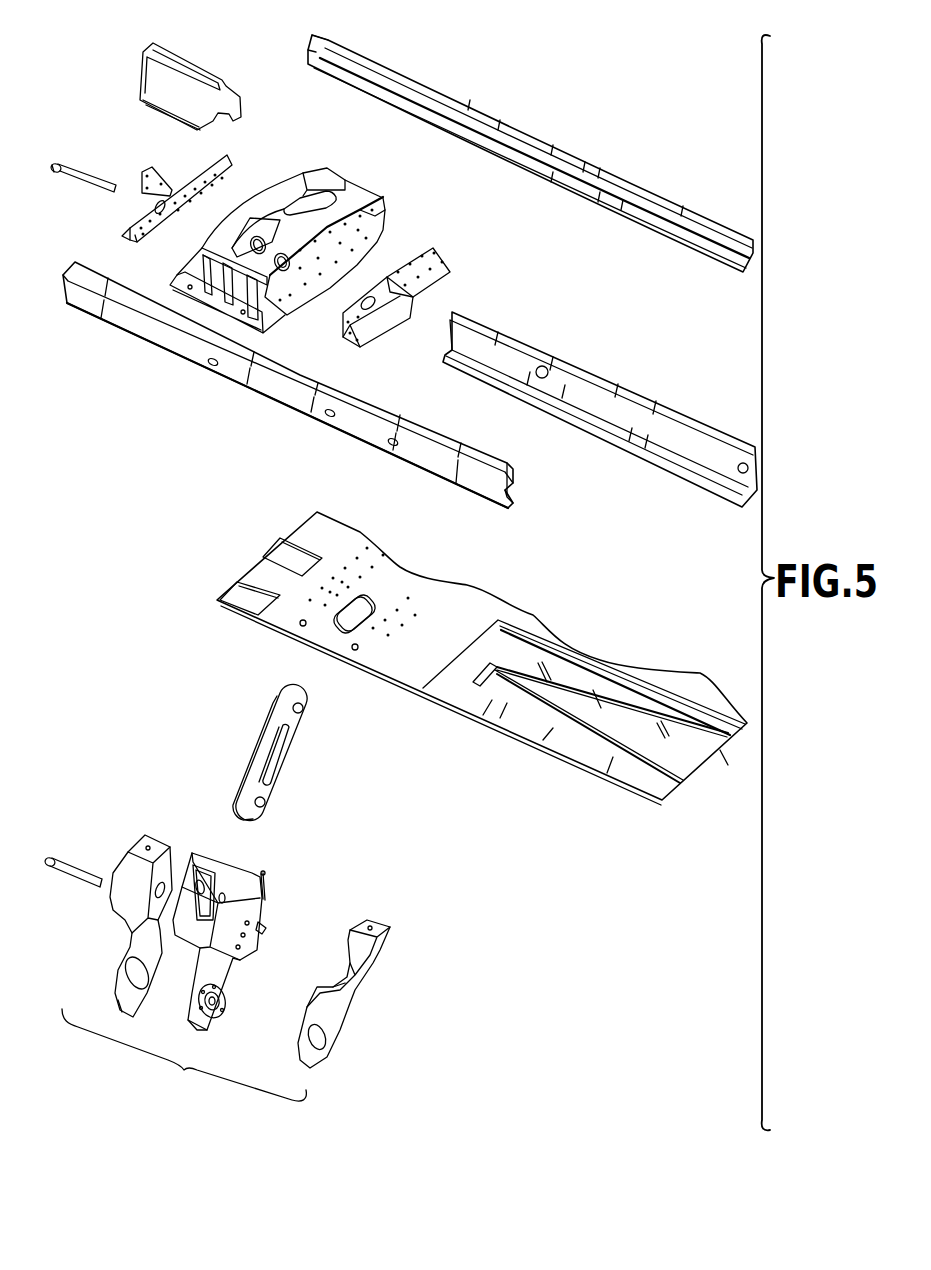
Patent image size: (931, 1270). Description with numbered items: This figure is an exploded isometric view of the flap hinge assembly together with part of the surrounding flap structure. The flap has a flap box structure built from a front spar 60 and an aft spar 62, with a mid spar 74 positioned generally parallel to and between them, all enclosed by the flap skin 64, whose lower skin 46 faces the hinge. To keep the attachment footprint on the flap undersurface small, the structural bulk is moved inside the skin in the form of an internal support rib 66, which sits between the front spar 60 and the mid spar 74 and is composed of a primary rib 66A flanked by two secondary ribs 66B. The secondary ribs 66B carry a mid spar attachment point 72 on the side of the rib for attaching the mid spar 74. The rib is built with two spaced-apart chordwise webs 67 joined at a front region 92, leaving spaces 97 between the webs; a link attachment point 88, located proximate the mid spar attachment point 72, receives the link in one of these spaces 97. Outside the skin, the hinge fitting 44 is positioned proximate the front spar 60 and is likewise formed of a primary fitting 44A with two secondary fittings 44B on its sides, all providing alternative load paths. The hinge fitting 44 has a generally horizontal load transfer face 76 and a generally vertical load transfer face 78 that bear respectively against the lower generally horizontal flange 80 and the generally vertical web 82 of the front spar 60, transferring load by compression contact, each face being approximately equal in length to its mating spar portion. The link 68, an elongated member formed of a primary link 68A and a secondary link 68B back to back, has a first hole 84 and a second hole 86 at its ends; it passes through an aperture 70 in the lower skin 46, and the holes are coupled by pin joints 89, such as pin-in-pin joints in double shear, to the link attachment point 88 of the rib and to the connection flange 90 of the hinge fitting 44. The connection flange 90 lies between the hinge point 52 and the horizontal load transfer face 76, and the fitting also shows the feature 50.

The hinge fitting 44 is at (239, 954).
The primary fitting 44A is at (217, 923).
The secondary fittings 44B is at (140, 942).
The lower skin 46 is at (400, 667).
The pivot hole 50 is at (203, 882).
The hinge point 52 is at (217, 1000).
The front spar 60 is at (310, 385).
The aft spar 62 is at (452, 102).
The flap skin 64 is at (482, 658).
The internal support rib 66 is at (478, 252).
The primary rib 66A is at (177, 280).
The secondary ribs 66B is at (190, 178).
The chordwise webs 67 is at (290, 181).
The link 68 is at (273, 769).
The primary link 68A is at (272, 792).
The secondary link 68B is at (265, 741).
The aperture 70 is at (330, 623).
The mid spar attachment point 72 is at (413, 303).
The mid spar 74 is at (487, 353).
The generally horizontal load transfer face 76 is at (377, 922).
The generally vertical load transfer face 78 is at (267, 898).
The lower generally horizontal flange 80 is at (515, 494).
The generally vertical web 82 is at (146, 330).
The first hole 84 is at (303, 712).
The second hole 86 is at (262, 810).
The link attachment point 88 is at (292, 267).
The pin joint 89 is at (70, 168).
The connection flange 90 is at (259, 943).
The front region 92 is at (240, 245).
The spaces 97 is at (268, 224).